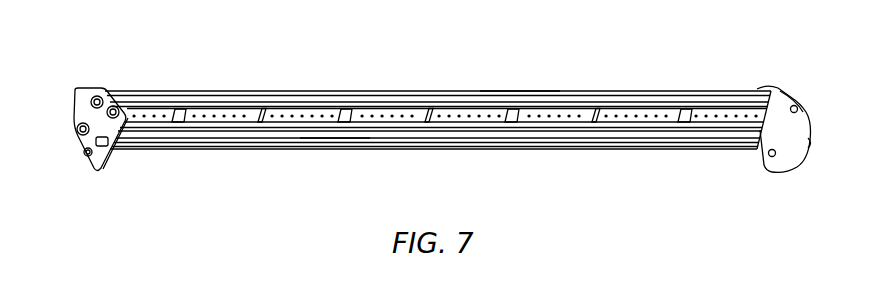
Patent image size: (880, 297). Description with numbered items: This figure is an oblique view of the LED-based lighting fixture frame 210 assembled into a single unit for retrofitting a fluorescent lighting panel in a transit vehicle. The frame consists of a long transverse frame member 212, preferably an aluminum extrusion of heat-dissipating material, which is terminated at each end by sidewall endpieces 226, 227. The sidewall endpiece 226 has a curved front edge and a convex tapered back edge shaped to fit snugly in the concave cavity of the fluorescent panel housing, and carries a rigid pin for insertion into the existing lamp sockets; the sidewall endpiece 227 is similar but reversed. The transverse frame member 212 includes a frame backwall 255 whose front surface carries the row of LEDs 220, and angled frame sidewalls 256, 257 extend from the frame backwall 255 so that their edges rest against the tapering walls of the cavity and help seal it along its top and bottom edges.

The LED-based lighting fixture frame 210 is at (409, 60).
The transverse frame member 212 is at (170, 92).
The light emitting diodes 220 is at (242, 119).
The sidewall endpiece 226 is at (84, 102).
The sidewall endpiece 227 is at (767, 87).
The frame backwall 255 is at (486, 128).
The angled frame sidewall 256 is at (520, 84).
The angled frame sidewall 257 is at (333, 148).